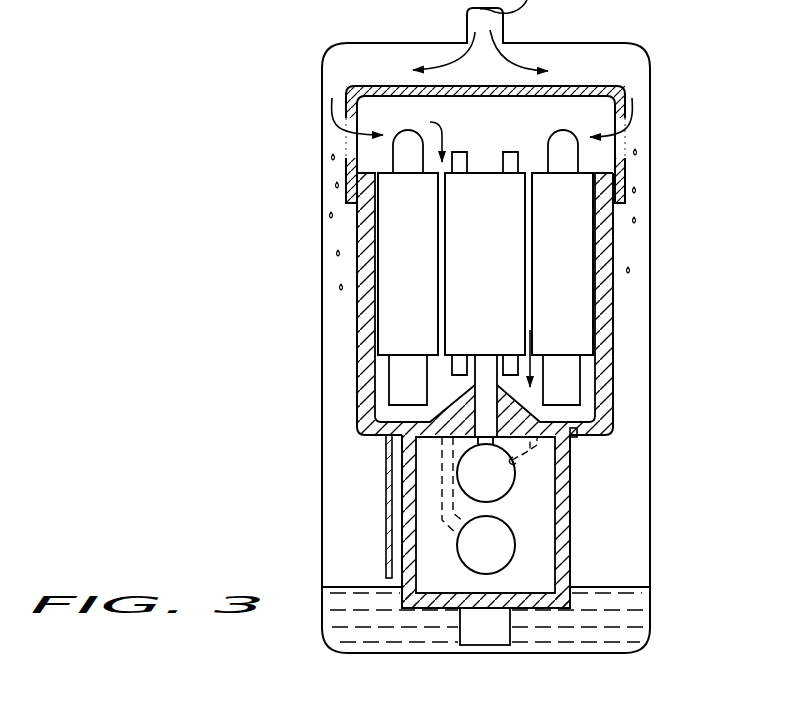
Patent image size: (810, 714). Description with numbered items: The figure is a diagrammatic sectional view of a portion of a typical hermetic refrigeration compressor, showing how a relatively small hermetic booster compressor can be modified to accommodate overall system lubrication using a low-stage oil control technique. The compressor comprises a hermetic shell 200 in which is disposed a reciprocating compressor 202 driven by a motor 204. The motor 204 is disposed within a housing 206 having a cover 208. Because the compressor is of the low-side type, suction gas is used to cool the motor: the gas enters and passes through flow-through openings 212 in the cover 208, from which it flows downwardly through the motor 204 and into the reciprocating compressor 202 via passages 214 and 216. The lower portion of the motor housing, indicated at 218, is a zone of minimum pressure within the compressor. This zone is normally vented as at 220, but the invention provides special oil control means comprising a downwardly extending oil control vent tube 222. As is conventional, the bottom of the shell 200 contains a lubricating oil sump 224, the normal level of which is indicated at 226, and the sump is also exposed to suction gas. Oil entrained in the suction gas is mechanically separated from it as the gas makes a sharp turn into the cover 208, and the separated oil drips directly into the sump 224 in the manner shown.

The hermetic shell 200 is at (650, 436).
The reciprocating compressor 202 is at (533, 533).
The motor 204 is at (395, 293).
The housing 206 is at (606, 297).
The cover 208 is at (582, 84).
The flow-through openings 212 is at (350, 143).
The passage 214 is at (440, 480).
The passage 216 is at (512, 472).
The lower portion of the motor housing 218 is at (445, 393).
The vent 220 is at (577, 437).
The oil control vent tube 222 is at (392, 508).
The lubricating oil sump 224 is at (622, 627).
The normal oil level 226 is at (622, 587).